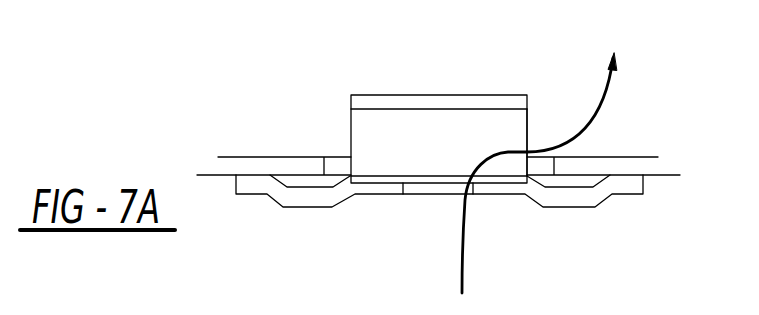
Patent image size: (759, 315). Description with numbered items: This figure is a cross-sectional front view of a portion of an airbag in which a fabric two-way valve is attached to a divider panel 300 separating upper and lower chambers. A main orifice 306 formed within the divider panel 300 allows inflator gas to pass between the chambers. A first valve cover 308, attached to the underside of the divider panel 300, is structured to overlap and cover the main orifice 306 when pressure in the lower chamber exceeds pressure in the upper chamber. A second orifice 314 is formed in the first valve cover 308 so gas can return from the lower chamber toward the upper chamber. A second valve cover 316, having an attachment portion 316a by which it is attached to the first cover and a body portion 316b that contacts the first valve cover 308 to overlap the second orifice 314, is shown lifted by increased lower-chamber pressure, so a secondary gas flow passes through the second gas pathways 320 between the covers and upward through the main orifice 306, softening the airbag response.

The divider panel 300 is at (612, 160).
The main orifice 306 is at (528, 152).
The first valve cover 308 is at (343, 200).
The second orifice 314 is at (432, 187).
The second valve cover 316 is at (272, 91).
The attachment portion 316a is at (272, 54).
The body portion 316b is at (458, 137).
The second gas pathways 320 is at (462, 257).